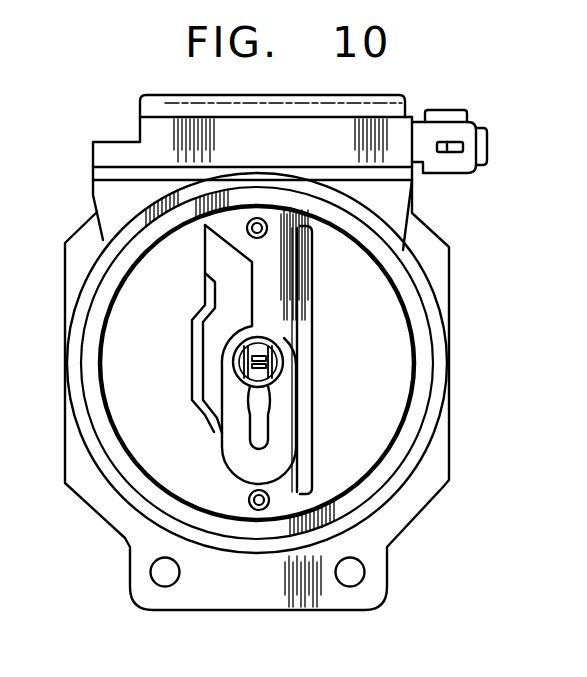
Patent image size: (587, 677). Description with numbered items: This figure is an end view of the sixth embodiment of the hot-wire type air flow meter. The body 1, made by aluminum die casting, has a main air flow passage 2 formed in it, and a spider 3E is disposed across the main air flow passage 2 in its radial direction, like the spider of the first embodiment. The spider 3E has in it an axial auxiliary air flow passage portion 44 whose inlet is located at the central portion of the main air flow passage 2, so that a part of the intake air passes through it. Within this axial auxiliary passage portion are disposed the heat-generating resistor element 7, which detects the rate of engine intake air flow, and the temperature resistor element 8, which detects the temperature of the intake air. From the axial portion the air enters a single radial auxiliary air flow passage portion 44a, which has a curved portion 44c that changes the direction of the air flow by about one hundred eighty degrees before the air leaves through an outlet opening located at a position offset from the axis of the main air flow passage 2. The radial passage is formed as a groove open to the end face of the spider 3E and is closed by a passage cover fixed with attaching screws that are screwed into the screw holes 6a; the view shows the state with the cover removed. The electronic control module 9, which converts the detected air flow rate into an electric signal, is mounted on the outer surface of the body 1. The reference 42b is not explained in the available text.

The body 1 is at (395, 522).
The main air flow passage 2 is at (357, 458).
The spider 3E is at (305, 264).
The screw holes 6a is at (258, 217).
The heat-generating resistor element 7 is at (275, 378).
The temperature resistor element 8 is at (272, 338).
The electronic control module 9 is at (170, 135).
The jaw 42b is at (212, 256).
The axial auxiliary air flow passage portion 44 is at (222, 400).
The radial auxiliary air flow passage portion 44a is at (287, 433).
The curved portion 44c is at (247, 460).